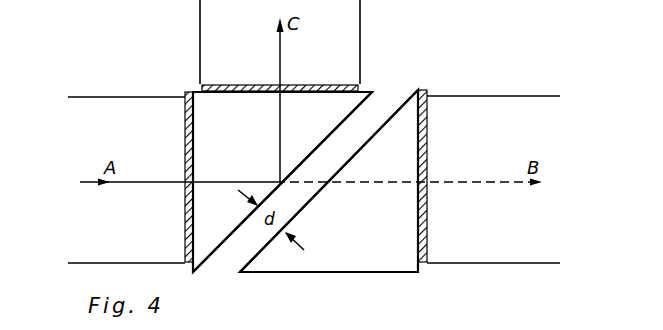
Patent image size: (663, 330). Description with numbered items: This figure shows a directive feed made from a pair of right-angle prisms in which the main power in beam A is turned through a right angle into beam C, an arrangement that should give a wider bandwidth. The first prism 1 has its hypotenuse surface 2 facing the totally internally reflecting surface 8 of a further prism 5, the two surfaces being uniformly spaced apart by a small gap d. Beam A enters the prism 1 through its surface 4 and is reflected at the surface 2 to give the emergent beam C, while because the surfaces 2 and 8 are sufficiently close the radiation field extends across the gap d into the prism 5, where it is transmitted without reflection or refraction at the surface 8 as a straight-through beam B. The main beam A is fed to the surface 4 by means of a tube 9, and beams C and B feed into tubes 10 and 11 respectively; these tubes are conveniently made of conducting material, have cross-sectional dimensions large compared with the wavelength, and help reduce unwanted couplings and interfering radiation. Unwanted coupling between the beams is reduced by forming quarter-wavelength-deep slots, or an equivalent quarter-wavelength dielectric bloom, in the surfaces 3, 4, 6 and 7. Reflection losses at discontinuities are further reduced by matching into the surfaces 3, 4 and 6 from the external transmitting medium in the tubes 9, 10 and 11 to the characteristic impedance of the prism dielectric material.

The prism 1 is at (244, 146).
The surface of the prism 2 is at (334, 128).
The surface 3 is at (235, 85).
The surface 4 is at (186, 226).
The further prism 5 is at (380, 242).
The surface 6 is at (426, 135).
The surface 7 is at (322, 273).
The totally internal reflecting surface 8 is at (386, 124).
The tube 9 is at (128, 96).
The tube 10 is at (207, 24).
The tube 11 is at (504, 96).